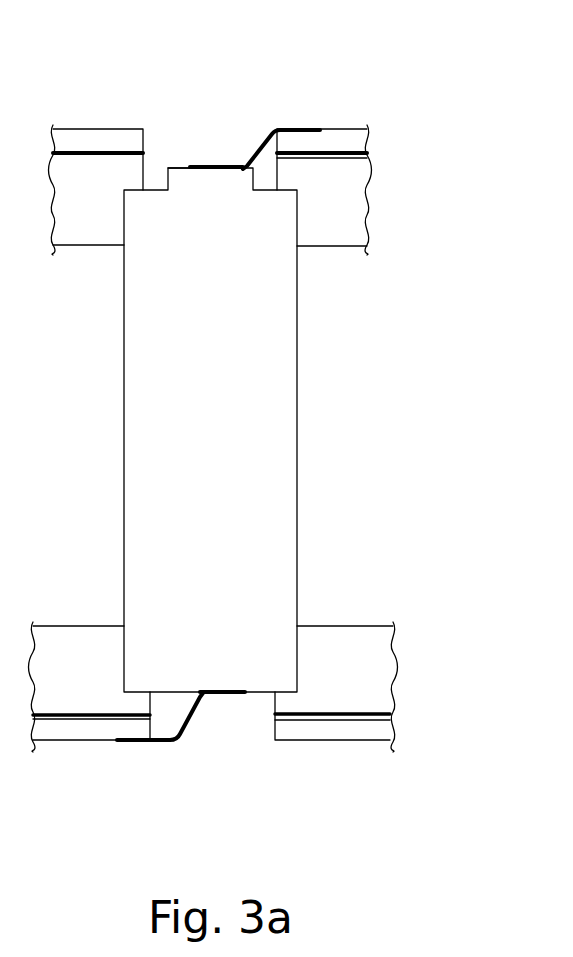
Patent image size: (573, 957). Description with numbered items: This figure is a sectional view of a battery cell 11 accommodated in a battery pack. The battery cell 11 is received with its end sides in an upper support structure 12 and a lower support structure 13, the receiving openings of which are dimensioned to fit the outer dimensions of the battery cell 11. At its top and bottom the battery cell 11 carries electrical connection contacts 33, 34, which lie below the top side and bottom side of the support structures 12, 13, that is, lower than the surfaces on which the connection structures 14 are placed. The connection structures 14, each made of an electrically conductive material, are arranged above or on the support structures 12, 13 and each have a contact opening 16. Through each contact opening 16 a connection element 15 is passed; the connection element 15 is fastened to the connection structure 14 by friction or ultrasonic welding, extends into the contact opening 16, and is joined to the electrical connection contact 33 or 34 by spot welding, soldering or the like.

The battery cell 11 is at (282, 410).
The upper support structure 12 is at (352, 204).
The lower support structure 13 is at (393, 660).
The connection structure 14 is at (353, 130).
The connection element 15 is at (282, 130).
The contact opening 16 is at (208, 123).
The electrical connection contact 33 is at (179, 167).
The electrical connection contact 34 is at (238, 696).